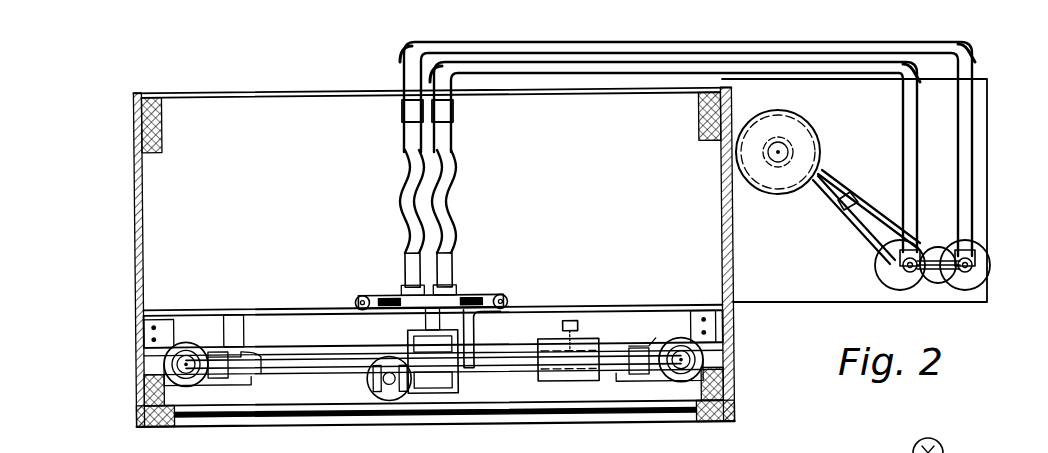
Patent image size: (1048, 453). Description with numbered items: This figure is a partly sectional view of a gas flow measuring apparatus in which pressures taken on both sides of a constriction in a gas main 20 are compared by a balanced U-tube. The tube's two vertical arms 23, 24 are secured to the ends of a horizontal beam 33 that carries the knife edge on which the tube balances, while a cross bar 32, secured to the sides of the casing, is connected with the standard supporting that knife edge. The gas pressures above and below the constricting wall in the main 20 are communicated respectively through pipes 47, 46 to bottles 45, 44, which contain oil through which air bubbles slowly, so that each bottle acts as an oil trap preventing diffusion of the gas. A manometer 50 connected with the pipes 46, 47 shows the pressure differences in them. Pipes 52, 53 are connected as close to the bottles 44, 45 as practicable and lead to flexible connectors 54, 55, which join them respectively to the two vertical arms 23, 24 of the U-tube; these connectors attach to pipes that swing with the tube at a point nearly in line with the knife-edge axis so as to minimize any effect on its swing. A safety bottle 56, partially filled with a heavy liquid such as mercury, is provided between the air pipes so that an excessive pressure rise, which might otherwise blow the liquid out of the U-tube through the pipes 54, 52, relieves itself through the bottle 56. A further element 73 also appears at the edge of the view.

The gas main 20 is at (818, 137).
The vertical arm of the U-tube 23 is at (166, 362).
The vertical arm of the U-tube 24 is at (700, 355).
The cross bar 32 is at (292, 319).
The horizontal beam 33 is at (312, 368).
The bottle 44 is at (886, 276).
The bottle 45 is at (972, 276).
The pipe 46 is at (850, 229).
The pipe 47 is at (878, 213).
The manometer 50 is at (848, 197).
The pipe 52 is at (822, 66).
The pipe 53 is at (694, 48).
The flexible connector 54 is at (454, 180).
The flexible connector 55 is at (404, 174).
The safety bottle 56 is at (936, 252).
The valve 73 is at (937, 441).